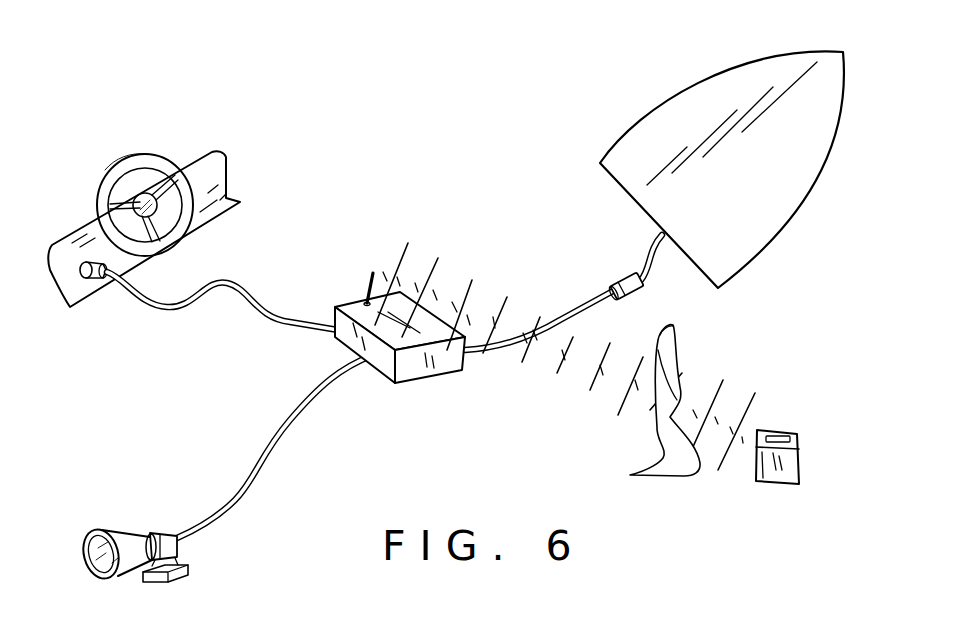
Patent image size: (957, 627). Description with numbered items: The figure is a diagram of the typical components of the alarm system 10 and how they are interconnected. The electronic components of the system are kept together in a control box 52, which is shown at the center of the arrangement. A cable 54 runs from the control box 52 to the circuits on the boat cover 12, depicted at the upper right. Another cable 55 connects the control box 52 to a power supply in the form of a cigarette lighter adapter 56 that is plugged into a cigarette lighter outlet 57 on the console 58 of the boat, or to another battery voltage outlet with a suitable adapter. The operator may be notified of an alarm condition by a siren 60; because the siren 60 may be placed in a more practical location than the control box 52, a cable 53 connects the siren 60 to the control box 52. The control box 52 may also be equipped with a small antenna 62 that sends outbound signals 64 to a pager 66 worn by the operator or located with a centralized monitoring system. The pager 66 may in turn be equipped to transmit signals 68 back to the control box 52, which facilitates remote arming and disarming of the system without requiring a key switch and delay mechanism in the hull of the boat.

The alarm system 10 is at (457, 192).
The boat cover 12 is at (723, 63).
The control box 52 is at (457, 372).
The cable 53 is at (278, 453).
The cable 54 is at (587, 302).
The cable 55 is at (270, 313).
The cigarette lighter adapter 56 is at (98, 283).
The cigarette lighter outlet 57 is at (86, 268).
The console 58 is at (233, 202).
The siren 60 is at (122, 537).
The antenna 62 is at (366, 291).
The outbound signals 64 is at (647, 405).
The pager 66 is at (799, 463).
The signals 68 is at (673, 325).